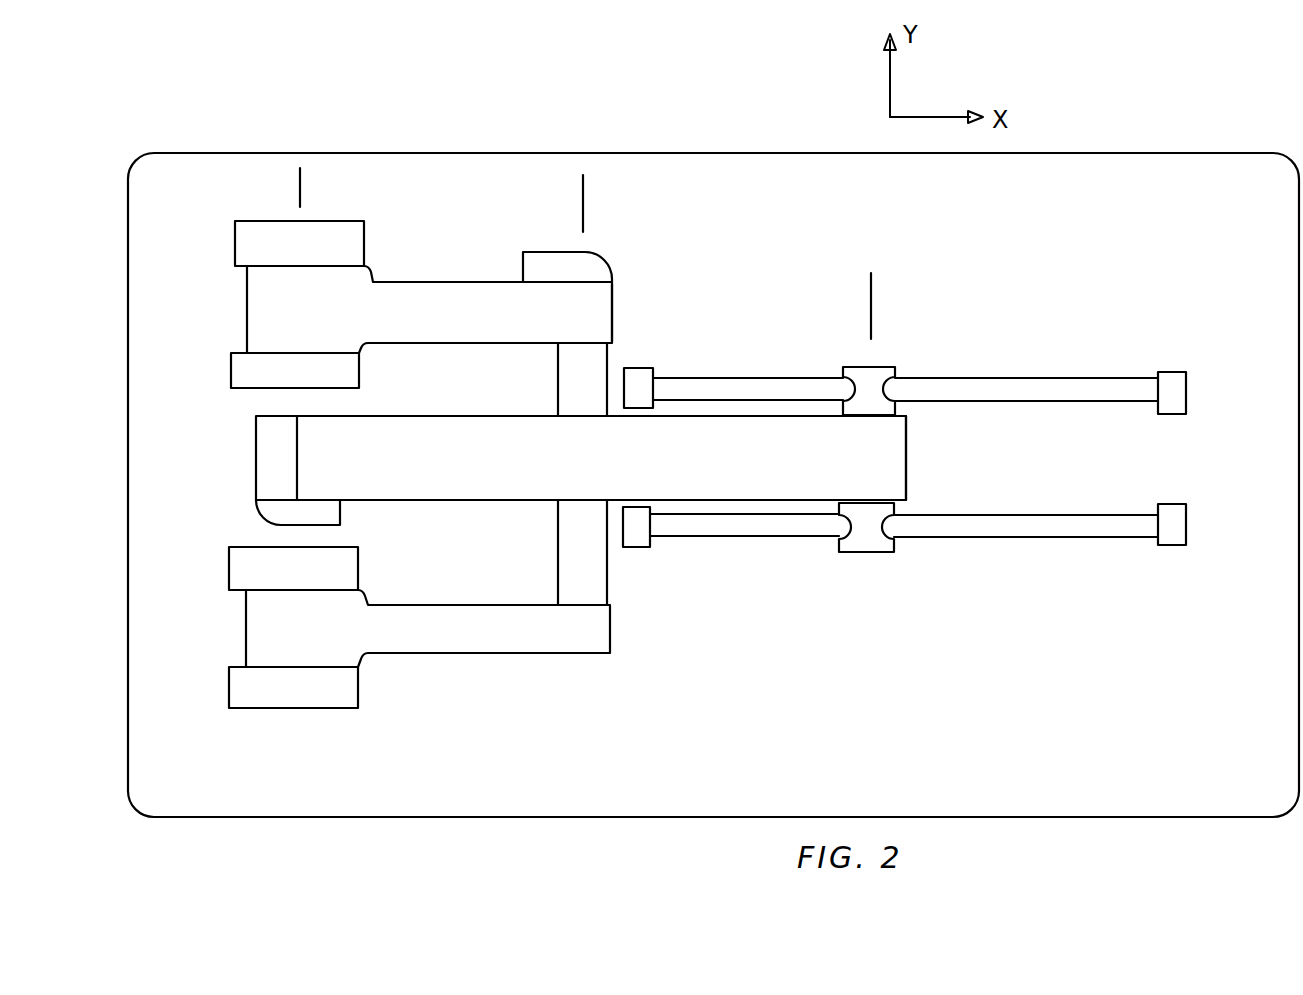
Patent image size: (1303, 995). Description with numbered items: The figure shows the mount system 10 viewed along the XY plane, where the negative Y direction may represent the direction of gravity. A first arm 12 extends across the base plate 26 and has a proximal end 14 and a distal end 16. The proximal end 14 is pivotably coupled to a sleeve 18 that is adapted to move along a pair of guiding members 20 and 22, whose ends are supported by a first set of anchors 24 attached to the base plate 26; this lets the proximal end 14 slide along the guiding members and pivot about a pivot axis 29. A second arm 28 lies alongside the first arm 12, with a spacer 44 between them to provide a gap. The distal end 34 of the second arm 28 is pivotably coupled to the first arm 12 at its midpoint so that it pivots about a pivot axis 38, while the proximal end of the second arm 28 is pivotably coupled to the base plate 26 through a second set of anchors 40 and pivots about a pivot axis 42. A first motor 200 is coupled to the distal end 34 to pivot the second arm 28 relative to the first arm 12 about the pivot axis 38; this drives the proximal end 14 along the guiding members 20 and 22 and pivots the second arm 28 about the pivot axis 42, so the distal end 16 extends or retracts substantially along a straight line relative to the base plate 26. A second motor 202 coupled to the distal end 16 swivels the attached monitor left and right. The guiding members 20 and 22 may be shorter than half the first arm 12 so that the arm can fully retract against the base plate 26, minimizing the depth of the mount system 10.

The mount system 10 is at (674, 272).
The first arm 12 is at (470, 473).
The proximal end 14 is at (882, 458).
The distal end 16 is at (280, 458).
The sleeve 18 is at (870, 378).
The guiding member 20 is at (997, 385).
The guiding member 22 is at (993, 527).
The first set of anchors 24 is at (650, 372).
The base plate 26 is at (460, 160).
The second arm 28 is at (435, 300).
The pivot axis 29 is at (871, 292).
The distal end 34 is at (595, 312).
The pivot axis 38 is at (583, 198).
The second set of anchors 40 is at (235, 246).
The pivot axis 42 is at (300, 183).
The spacer 44 is at (570, 387).
The first motor 200 is at (575, 265).
The second motor 202 is at (273, 515).